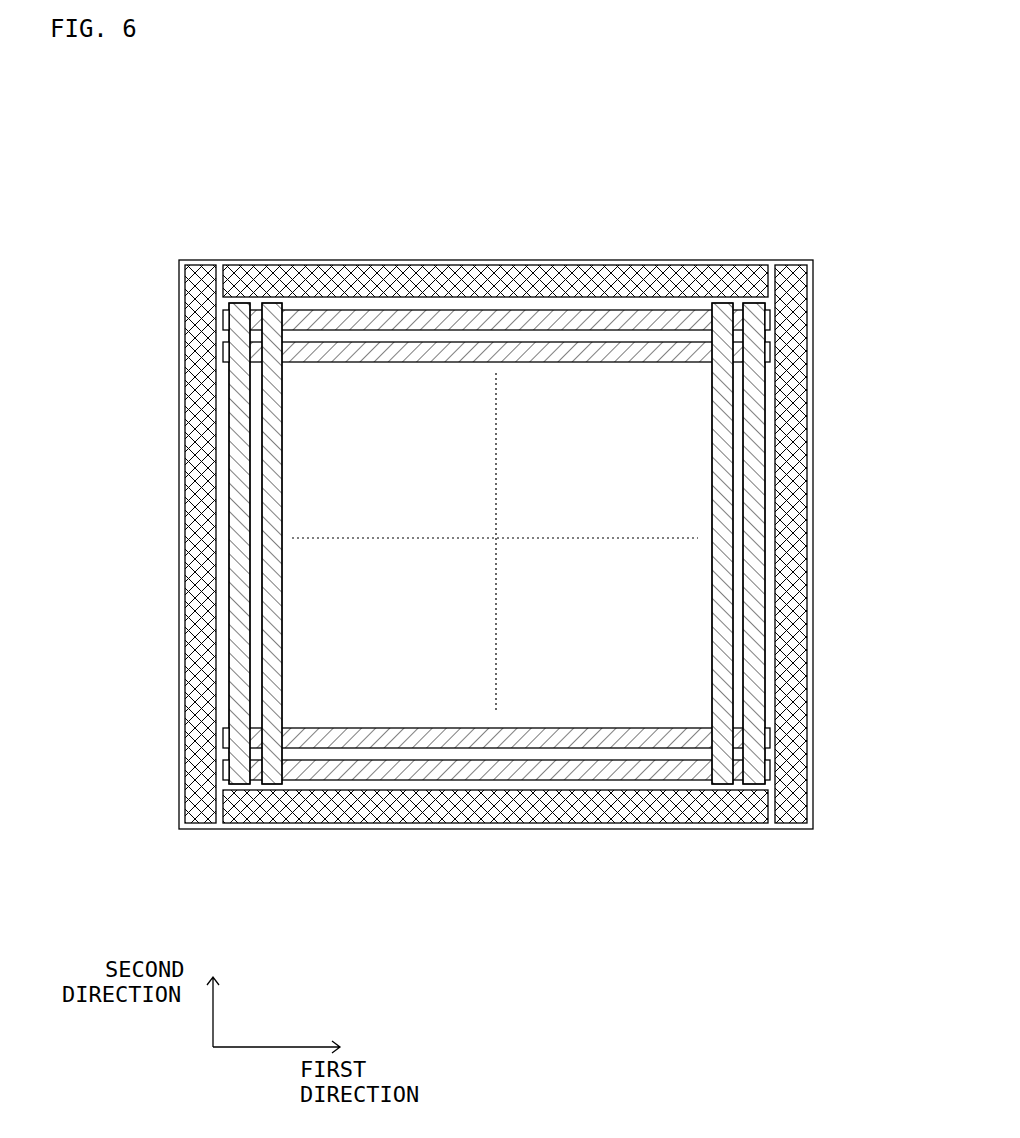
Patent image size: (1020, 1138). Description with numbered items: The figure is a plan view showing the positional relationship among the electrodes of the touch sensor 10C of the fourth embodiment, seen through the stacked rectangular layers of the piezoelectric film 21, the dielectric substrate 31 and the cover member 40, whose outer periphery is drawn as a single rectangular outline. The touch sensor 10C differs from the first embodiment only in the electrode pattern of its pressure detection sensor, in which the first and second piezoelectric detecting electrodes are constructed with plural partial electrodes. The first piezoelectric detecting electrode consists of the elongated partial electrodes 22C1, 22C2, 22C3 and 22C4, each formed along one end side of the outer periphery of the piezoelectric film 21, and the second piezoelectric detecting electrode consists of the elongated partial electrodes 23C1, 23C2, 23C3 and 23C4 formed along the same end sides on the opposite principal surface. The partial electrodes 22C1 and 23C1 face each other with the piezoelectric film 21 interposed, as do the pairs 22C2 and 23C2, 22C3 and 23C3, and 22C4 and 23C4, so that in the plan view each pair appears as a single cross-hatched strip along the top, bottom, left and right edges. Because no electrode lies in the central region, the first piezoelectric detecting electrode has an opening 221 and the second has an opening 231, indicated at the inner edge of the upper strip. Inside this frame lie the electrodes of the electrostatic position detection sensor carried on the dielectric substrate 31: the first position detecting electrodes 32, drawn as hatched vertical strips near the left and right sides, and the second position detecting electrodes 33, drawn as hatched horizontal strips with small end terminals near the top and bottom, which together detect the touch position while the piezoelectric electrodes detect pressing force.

The touch sensor 10C is at (496, 487).
The piezoelectric film 21 is at (496, 521).
The dielectric substrate 31 is at (496, 521).
The cover member 40 is at (588, 252).
The partial electrode 22C1 is at (495, 245).
The partial electrode 23C1 is at (338, 272).
The partial electrode 22C2 is at (495, 833).
The partial electrode 23C2 is at (375, 808).
The partial electrode 22C3 is at (160, 570).
The partial electrode 23C3 is at (195, 808).
The partial electrode 22C4 is at (795, 570).
The partial electrode 23C4 is at (797, 810).
The opening 221 is at (497, 500).
The opening 231 is at (441, 290).
The first position detecting electrode 32 is at (268, 304).
The second position detecting electrode 33 is at (771, 350).